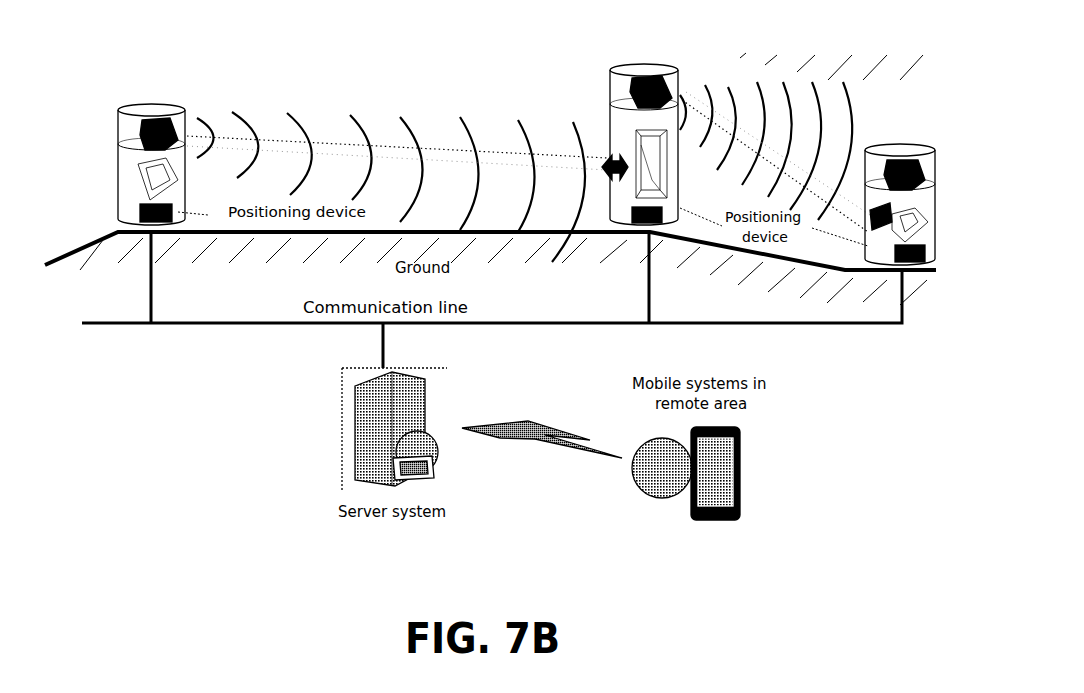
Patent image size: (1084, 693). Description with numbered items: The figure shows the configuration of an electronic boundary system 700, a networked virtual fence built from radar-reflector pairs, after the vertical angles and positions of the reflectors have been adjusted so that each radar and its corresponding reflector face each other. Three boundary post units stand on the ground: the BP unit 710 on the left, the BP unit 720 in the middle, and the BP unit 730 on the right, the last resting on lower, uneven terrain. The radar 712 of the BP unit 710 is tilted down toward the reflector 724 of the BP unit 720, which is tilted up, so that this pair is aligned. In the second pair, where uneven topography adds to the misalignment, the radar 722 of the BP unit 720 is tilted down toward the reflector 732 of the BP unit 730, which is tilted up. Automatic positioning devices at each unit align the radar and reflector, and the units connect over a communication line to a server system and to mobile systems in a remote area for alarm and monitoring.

The electronic boundary system 700 is at (428, 50).
The BP unit 710 is at (158, 142).
The radar 712 is at (117, 137).
The BP unit 720 is at (651, 123).
The radar 722 is at (609, 103).
The reflector 724 is at (713, 193).
The BP unit 730 is at (873, 136).
The reflector 732 is at (959, 208).